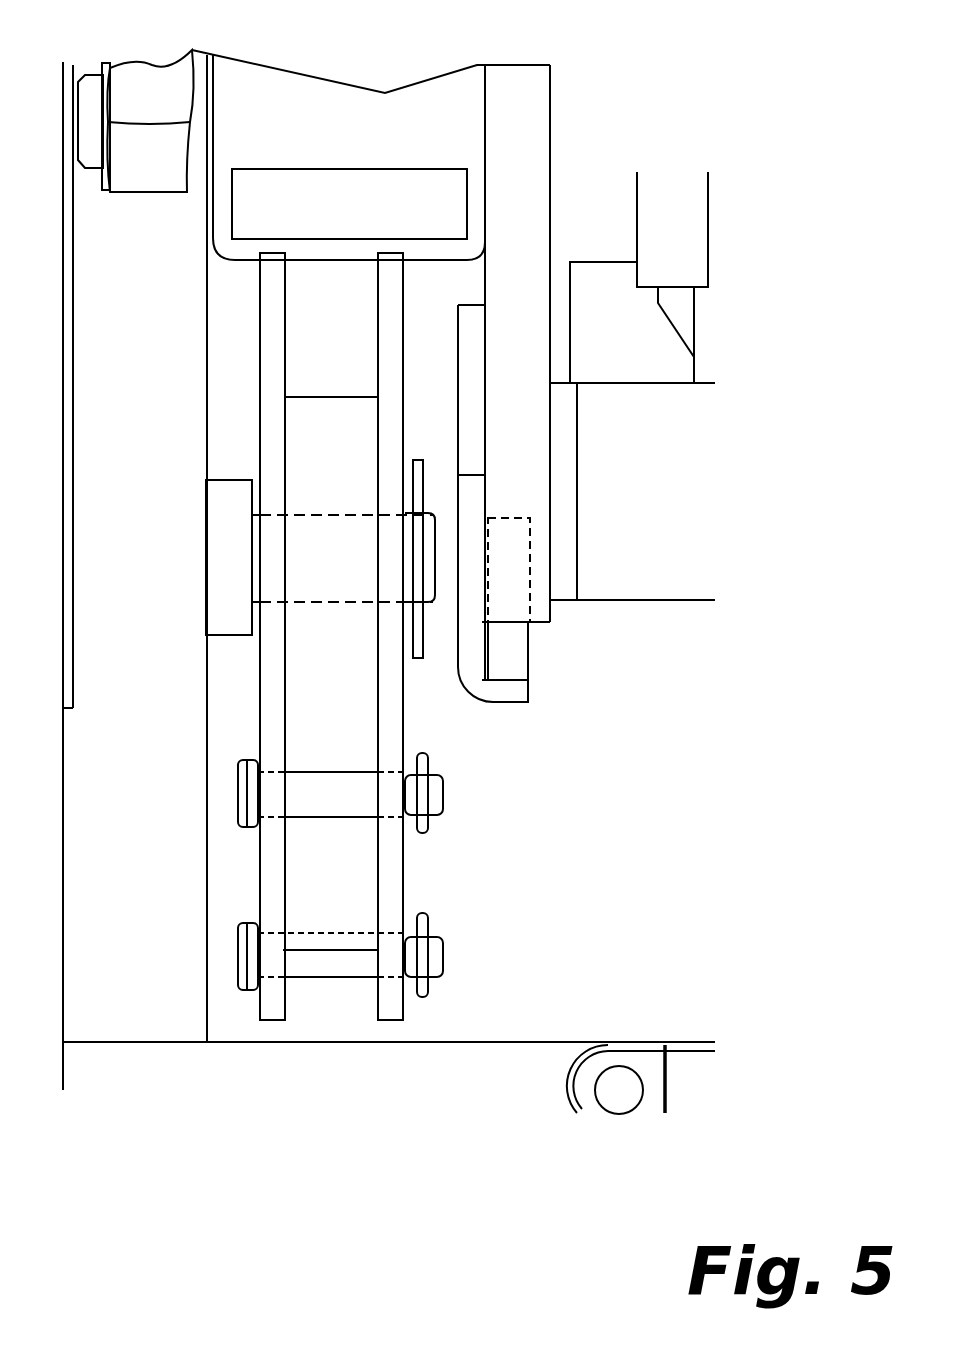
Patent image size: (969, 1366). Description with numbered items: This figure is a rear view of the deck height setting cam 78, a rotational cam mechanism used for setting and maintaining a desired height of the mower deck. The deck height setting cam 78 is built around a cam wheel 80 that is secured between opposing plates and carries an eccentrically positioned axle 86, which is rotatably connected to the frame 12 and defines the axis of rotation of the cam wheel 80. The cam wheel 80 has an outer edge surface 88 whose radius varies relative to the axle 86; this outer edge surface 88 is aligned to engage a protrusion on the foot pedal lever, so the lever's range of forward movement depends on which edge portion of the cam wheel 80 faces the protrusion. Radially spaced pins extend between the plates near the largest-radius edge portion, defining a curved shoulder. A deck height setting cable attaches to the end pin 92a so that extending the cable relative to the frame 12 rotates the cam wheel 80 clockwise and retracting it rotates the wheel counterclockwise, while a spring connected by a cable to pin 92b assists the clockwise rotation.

The frame 12 is at (63, 66).
The deck height setting cam 78 is at (423, 1058).
The cam wheel 80 is at (318, 675).
The axle 86 is at (411, 568).
The outer edge surface 88 is at (320, 390).
The end pin 92a is at (418, 962).
The pin 92b is at (243, 793).